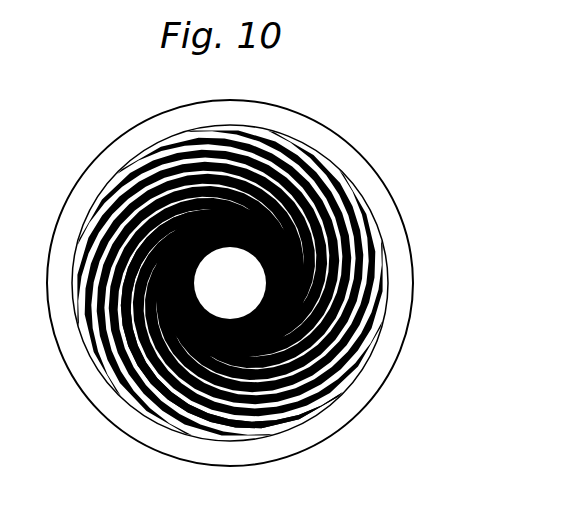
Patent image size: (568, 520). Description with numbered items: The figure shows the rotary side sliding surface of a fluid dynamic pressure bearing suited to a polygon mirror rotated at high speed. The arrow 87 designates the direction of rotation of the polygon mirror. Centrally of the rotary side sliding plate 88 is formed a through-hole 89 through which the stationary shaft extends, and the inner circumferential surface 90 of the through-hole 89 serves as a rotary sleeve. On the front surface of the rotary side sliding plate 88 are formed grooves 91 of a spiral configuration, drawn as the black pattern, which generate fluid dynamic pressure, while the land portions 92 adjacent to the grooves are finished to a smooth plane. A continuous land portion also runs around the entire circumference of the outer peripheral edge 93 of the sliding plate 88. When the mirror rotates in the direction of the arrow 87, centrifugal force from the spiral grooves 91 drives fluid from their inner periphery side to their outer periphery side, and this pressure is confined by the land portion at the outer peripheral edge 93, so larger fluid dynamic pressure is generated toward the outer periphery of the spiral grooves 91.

The arrow 87 is at (470, 376).
The rotary side sliding plate 88 is at (339, 133).
The through-hole 89 is at (230, 283).
The inner circumferential surface 90 is at (230, 283).
The grooves 91 is at (345, 395).
The land portions 92 is at (234, 440).
The outer peripheral edge 93 is at (171, 449).